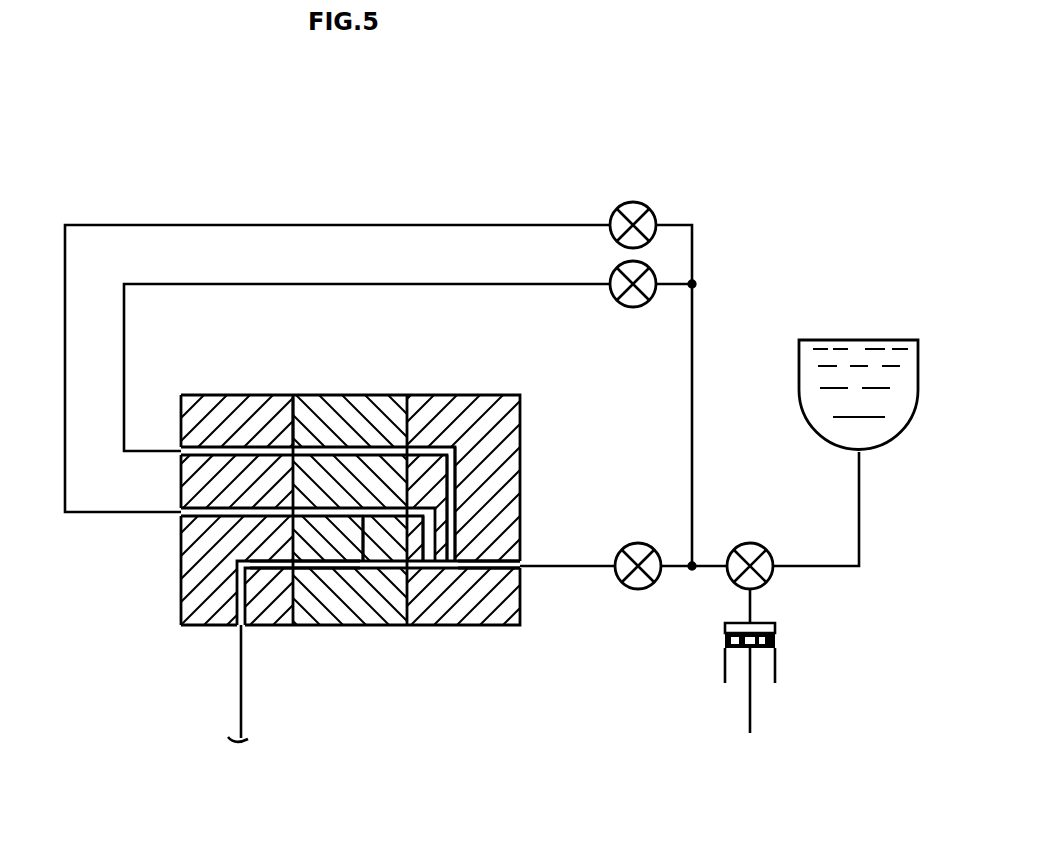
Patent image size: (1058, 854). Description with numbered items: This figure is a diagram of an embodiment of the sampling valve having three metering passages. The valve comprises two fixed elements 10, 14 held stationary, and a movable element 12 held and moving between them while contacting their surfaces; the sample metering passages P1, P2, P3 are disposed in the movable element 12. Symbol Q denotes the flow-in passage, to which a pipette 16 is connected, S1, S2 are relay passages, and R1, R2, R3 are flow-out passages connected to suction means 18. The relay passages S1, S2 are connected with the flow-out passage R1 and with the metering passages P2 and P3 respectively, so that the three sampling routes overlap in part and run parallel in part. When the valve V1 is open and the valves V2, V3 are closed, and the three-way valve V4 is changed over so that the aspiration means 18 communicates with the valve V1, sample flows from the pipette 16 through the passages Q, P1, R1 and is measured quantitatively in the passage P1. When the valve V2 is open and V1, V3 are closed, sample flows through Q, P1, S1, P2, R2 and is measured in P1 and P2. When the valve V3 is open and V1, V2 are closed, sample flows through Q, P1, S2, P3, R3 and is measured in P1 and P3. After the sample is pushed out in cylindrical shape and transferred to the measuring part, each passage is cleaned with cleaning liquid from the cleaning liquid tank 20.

The fixed element 10 is at (213, 395).
The movable element 12 is at (377, 381).
The fixed element 14 is at (475, 395).
The pipette 16 is at (240, 676).
The suction means 18 is at (778, 657).
The cleaning liquid tank 20 is at (835, 340).
The metering passage P1 is at (333, 578).
The metering passage P2 is at (364, 522).
The metering passage P3 is at (333, 452).
The flow-out passage R1 is at (484, 568).
The flow-out passage R2 is at (222, 516).
The flow-out passage R3 is at (222, 456).
The relay passage S1 is at (428, 533).
The relay passage S2 is at (452, 492).
The flow-in passage Q is at (242, 600).
The valve V1 is at (637, 543).
The valve V2 is at (652, 204).
The valve V3 is at (615, 267).
The three-way valve V4 is at (757, 543).